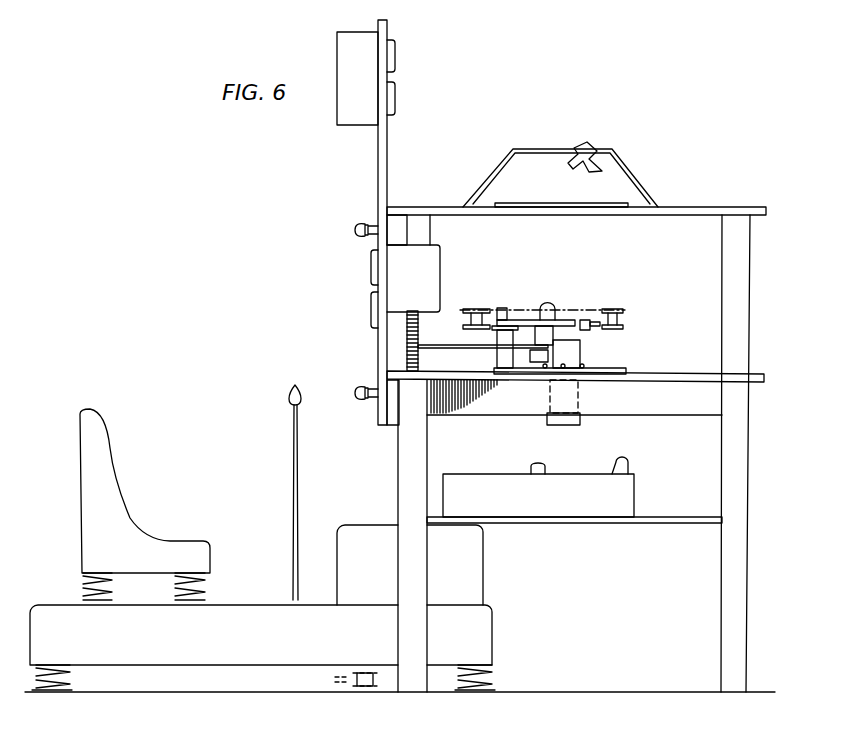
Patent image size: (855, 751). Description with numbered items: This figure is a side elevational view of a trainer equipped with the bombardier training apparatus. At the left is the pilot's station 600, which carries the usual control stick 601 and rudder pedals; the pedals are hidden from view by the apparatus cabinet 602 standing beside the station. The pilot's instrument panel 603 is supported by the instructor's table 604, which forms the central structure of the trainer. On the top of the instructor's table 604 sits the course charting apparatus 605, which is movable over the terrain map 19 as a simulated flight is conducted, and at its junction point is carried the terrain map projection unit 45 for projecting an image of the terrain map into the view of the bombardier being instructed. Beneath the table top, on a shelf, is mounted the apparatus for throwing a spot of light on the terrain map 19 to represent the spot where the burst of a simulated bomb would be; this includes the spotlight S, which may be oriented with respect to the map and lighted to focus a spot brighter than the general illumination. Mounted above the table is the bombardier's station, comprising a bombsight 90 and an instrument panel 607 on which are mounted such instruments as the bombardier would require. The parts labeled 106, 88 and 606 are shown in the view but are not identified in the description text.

The instrument panel 607 is at (392, 142).
The bombsight 90 is at (562, 149).
The propeller/cross member 106 is at (583, 165).
The plate 88 is at (628, 203).
The instrument panel 603 is at (379, 298).
The terrain map projection unit 45 is at (548, 305).
The course charting apparatus 605 is at (586, 347).
The terrain map 19 is at (624, 373).
The instructor's table 604 is at (640, 409).
The spotlight S is at (547, 471).
The control box 606 is at (628, 498).
The apparatus cabinet 602 is at (473, 589).
The pilot's station 600 is at (214, 549).
The control stick 601 is at (291, 457).